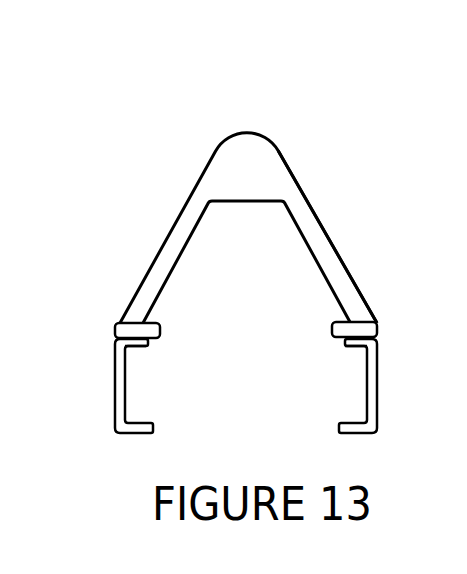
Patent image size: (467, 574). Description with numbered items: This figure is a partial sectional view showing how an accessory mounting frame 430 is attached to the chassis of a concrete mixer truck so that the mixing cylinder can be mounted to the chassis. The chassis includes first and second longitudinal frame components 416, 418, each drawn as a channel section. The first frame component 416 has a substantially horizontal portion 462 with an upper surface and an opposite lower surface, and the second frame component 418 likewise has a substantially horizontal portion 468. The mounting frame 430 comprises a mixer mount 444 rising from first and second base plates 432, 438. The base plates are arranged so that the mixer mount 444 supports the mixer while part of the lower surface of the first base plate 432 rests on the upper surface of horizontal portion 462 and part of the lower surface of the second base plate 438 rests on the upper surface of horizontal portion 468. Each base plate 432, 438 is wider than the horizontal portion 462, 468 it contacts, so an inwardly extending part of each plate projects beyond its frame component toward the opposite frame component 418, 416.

The accessory mounting frame 430 is at (260, 118).
The mixer mount 444 is at (320, 242).
The first base plate 432 is at (150, 330).
The second base plate 438 is at (358, 328).
The first longitudinal frame component 416 is at (120, 378).
The second longitudinal frame component 418 is at (375, 377).
The horizontal portion 462 is at (148, 342).
The horizontal portion 468 is at (338, 342).